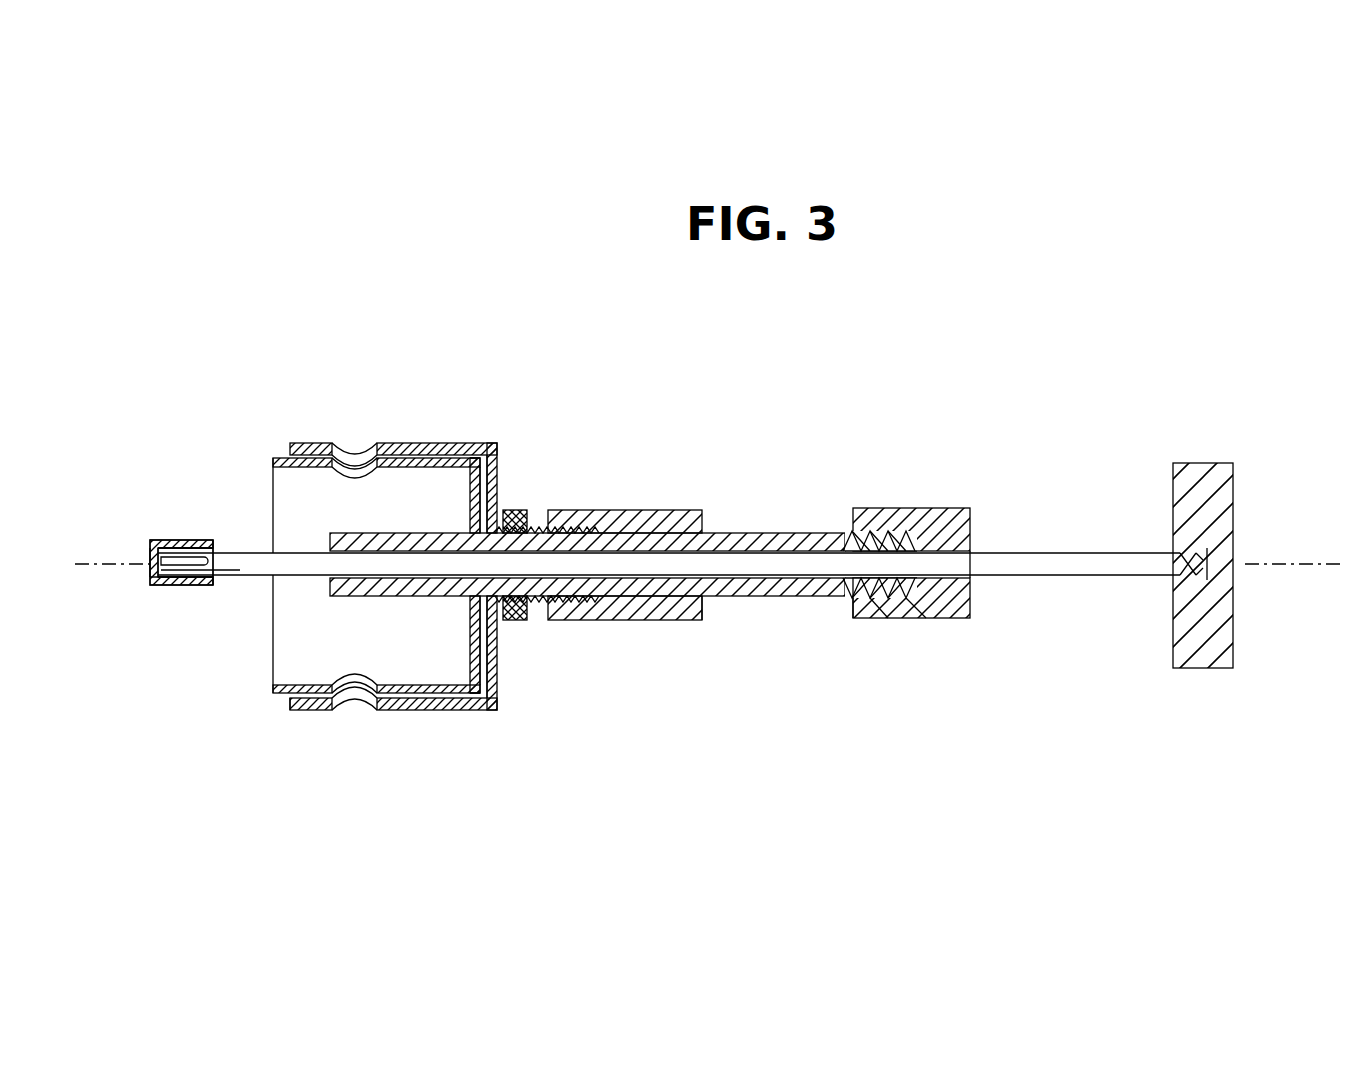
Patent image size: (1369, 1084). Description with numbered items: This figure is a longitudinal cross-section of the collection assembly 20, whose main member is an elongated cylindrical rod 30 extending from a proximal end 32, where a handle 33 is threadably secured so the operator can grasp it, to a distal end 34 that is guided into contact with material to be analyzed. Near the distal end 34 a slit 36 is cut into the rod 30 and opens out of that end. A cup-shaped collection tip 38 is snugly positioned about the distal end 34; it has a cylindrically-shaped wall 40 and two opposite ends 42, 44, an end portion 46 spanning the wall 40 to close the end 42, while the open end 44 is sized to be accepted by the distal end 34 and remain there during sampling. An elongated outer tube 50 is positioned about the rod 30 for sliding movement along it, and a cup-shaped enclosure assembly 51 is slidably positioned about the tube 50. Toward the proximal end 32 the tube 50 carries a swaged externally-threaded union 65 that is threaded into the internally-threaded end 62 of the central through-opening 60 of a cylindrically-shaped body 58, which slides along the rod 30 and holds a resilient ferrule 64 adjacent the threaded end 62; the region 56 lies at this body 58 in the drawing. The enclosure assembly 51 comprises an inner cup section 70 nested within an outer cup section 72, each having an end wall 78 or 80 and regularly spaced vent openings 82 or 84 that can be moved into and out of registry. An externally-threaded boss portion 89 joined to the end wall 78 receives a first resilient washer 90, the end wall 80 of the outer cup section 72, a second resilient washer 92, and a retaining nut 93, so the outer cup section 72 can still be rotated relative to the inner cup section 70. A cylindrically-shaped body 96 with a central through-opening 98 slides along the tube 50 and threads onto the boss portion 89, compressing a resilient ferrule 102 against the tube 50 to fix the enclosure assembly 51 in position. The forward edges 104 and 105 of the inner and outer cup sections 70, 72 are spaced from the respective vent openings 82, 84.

The collection assembly 20 is at (798, 410).
The elongated rod 30 is at (1038, 553).
The proximal end 32 is at (1200, 548).
The handle 33 is at (1215, 463).
The distal end 34 is at (150, 550).
The slit 36 is at (193, 545).
The collection tip 38 is at (187, 585).
The cylindrically-shaped wall 40 is at (175, 540).
The closed end 42 is at (150, 585).
The open end 44 is at (215, 582).
The end portion 46 is at (150, 575).
The outer tube 50 is at (752, 532).
The cup-shaped enclosure assembly 51 is at (467, 442).
The nut face 56 is at (862, 618).
The cylindrically-shaped body 58 is at (900, 508).
The central through-opening 60 is at (968, 578).
The internally-threaded end 62 is at (813, 545).
The resilient ferrule 64 is at (922, 612).
The externally-threaded union 65 is at (887, 608).
The inner cup section 70 is at (275, 457).
The outer cup section 72 is at (422, 442).
The end wall 78 is at (497, 460).
The end wall 80 is at (500, 495).
The vent openings 82 is at (360, 452).
The vent openings 84 is at (343, 447).
The externally-threaded boss portion 89 is at (510, 508).
The first resilient washer 90 is at (493, 655).
The second resilient washer 92 is at (507, 623).
The retaining nut 93 is at (552, 623).
The cylindrically-shaped body 96 is at (617, 510).
The central through-opening 98 is at (607, 622).
The resilient ferrule 102 is at (703, 622).
The forward edge 104 is at (273, 663).
The forward edge 105 is at (288, 708).